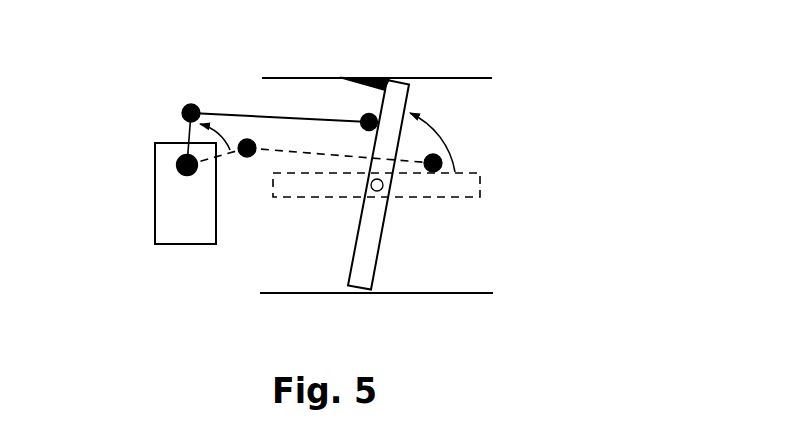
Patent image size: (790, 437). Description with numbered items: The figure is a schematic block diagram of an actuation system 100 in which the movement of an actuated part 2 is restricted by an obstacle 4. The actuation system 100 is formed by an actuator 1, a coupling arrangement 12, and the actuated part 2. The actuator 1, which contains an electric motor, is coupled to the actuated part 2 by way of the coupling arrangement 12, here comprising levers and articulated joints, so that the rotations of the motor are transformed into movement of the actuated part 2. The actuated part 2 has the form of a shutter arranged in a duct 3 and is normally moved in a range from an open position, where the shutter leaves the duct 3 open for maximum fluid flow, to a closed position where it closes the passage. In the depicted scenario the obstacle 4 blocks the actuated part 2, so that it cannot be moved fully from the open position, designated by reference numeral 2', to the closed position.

The actuation system 100 is at (108, 223).
The actuator 1 is at (167, 253).
The coupling arrangement 12 is at (175, 95).
The actuated part 2 is at (386, 185).
The open position of the actuated part 2' is at (395, 208).
The duct 3 is at (469, 88).
The obstacle 4 is at (378, 78).